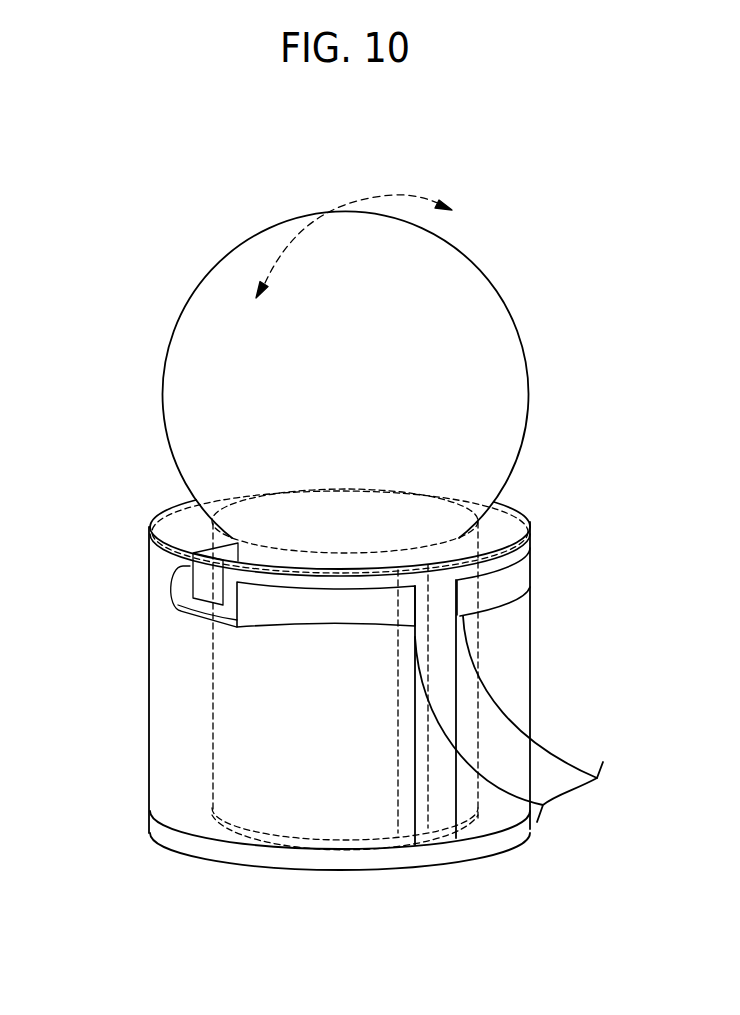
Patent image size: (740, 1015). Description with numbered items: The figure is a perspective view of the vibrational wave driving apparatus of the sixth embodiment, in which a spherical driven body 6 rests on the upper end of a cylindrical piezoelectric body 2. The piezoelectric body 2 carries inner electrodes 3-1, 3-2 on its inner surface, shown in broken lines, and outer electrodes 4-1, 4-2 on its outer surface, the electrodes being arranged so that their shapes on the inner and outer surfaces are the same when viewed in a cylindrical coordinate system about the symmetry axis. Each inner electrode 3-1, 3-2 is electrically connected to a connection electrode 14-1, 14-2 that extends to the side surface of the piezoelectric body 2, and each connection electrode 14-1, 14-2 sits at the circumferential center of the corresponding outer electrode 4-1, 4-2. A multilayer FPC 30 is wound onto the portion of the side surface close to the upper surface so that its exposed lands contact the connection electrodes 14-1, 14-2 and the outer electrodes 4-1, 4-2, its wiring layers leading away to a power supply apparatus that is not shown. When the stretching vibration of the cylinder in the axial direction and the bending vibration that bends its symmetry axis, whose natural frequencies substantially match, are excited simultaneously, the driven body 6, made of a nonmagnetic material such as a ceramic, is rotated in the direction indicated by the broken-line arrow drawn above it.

The piezoelectric body 2 is at (178, 508).
The driven body 6 is at (497, 342).
The connection electrode 14-1 is at (203, 581).
The connection electrode 14-2 is at (493, 502).
The outer electrode 4-1 is at (162, 660).
The outer electrode 4-2 is at (518, 662).
The multilayer FPC 30 is at (550, 772).
The inner electrode 3-1 is at (340, 838).
The inner electrode 3-2 is at (473, 822).